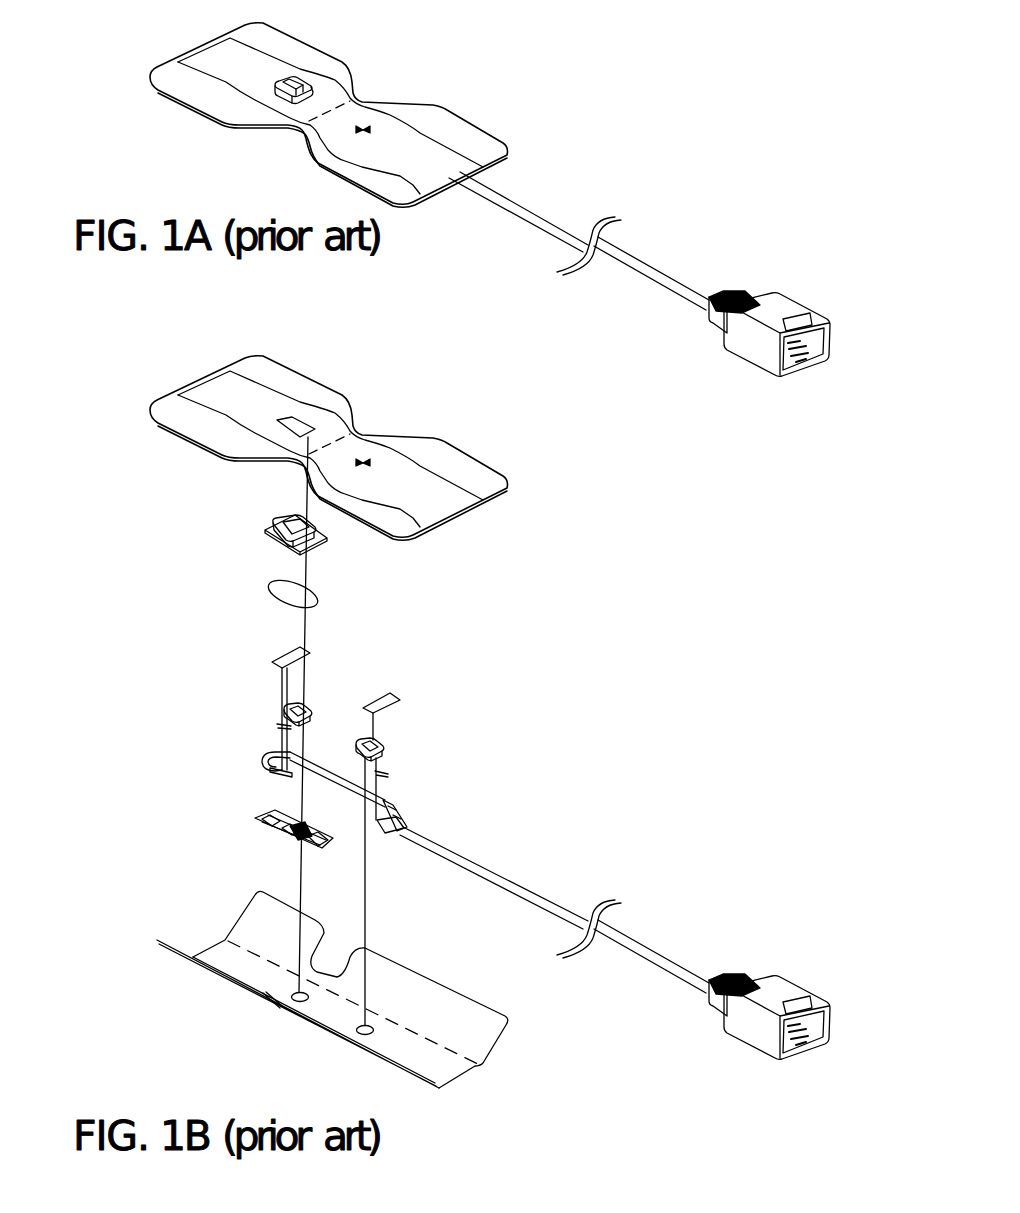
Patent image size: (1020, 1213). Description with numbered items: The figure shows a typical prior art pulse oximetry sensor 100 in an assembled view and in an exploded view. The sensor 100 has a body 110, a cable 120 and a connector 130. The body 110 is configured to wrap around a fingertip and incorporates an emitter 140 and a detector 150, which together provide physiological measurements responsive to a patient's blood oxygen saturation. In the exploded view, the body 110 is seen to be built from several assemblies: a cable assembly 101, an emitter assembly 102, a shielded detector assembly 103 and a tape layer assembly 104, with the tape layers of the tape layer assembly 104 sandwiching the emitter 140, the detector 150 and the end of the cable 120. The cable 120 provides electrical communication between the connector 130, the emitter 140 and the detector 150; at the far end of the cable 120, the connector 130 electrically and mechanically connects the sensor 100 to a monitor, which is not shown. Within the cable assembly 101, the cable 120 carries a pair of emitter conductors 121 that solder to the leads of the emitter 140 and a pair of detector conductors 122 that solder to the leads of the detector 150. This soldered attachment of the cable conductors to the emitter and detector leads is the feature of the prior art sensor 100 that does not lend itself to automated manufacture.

In FIG. 1A, the pulse oximetry sensor 100 is at (584, 55).
In FIG. 1B, the pulse oximetry sensor 100 is at (396, 358).
In FIG. 1B, the cable assembly 101 is at (673, 818).
In FIG. 1B, the emitter assembly 102 is at (458, 742).
In FIG. 1B, the shielded detector assembly 103 is at (242, 686).
In FIG. 1B, the tape layer assembly 104 is at (127, 409).
In FIG. 1A, the body 110 is at (468, 133).
In FIG. 1A, the cable 120 is at (652, 260).
In FIG. 1B, the cable 120 is at (652, 943).
In FIG. 1B, the emitter conductors 121 is at (383, 832).
In FIG. 1B, the detector conductors 122 is at (282, 774).
In FIG. 1A, the connector 130 is at (788, 300).
In FIG. 1B, the connector 130 is at (788, 983).
In FIG. 1B, the emitter 140 is at (378, 742).
In FIG. 1B, the detector 150 is at (306, 705).